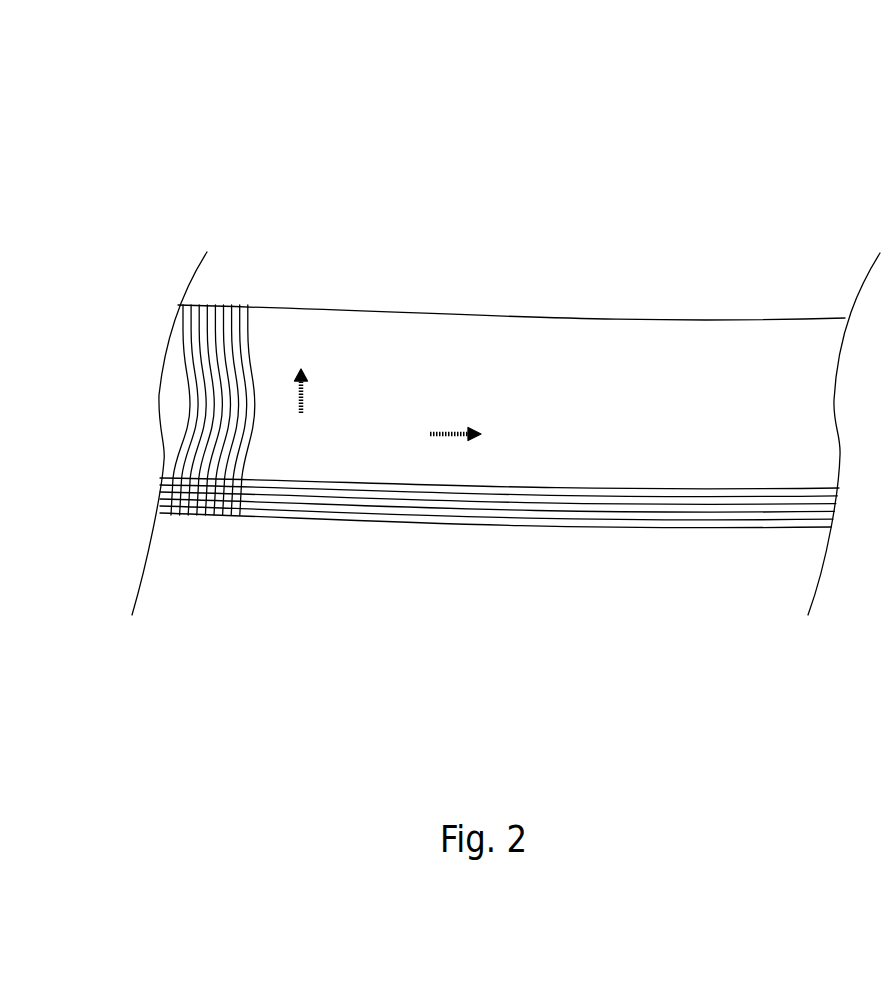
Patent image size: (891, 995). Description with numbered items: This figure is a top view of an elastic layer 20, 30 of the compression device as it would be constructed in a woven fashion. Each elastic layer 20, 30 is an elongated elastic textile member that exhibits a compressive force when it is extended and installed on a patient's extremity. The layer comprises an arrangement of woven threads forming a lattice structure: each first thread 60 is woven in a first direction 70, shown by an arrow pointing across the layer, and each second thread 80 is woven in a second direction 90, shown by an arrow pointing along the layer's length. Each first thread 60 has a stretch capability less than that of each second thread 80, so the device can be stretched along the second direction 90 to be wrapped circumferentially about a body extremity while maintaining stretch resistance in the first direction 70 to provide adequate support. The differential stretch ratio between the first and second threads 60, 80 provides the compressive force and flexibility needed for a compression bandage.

The elastic layer 20 is at (506, 331).
The elastic layer 30 is at (506, 433).
The first thread 60 is at (243, 346).
The second thread 80 is at (333, 519).
The first direction 70 is at (316, 392).
The second direction 90 is at (455, 423).